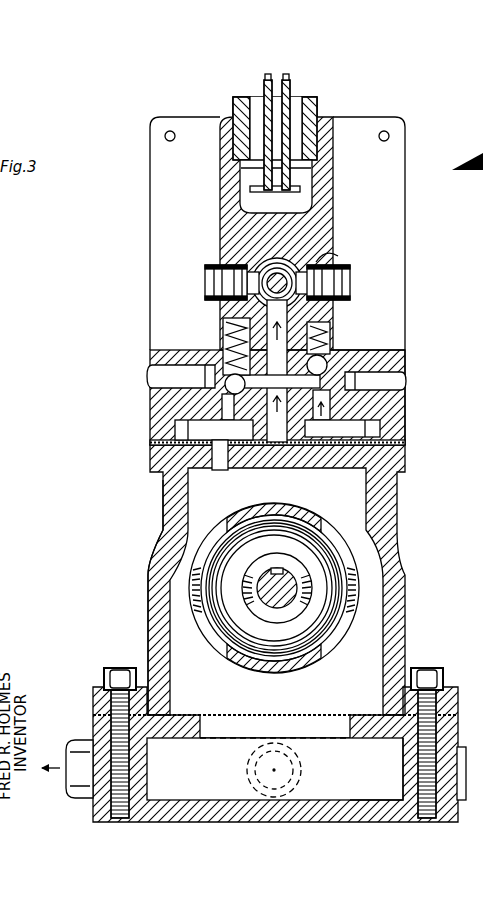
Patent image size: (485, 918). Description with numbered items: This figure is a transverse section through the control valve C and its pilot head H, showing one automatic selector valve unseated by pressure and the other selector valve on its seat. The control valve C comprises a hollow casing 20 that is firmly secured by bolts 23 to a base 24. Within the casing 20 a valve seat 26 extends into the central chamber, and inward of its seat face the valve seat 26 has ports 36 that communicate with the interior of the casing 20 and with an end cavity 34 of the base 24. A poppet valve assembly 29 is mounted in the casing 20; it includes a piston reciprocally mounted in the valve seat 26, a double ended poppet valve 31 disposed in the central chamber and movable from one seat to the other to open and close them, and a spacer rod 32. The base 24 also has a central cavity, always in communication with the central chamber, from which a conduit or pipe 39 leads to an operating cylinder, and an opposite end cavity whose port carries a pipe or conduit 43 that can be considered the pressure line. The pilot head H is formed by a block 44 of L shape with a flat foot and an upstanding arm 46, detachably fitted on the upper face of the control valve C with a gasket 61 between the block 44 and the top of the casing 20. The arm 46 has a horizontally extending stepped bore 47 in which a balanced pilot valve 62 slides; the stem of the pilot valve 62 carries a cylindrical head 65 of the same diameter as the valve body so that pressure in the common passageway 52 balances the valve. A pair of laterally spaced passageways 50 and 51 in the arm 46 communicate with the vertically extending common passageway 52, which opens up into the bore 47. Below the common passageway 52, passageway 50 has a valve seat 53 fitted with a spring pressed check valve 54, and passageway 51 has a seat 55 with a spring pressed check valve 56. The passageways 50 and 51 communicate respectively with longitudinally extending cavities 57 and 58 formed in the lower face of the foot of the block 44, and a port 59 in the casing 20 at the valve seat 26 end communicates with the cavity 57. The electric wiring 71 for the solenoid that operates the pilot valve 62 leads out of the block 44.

The pilot head H is at (218, 209).
The block 44 is at (218, 238).
The upstanding arm 46 is at (338, 242).
The stepped bore 47 is at (262, 272).
The balanced pilot valve 62 is at (318, 259).
The cylindrical head 65 is at (215, 310).
The common passageway 52 is at (334, 298).
The passageway 50 is at (224, 336).
The passageway 51 is at (338, 338).
The valve seat 53 is at (180, 394).
The spring pressed check valve 54 is at (165, 361).
The seat 55 is at (408, 379).
The spring pressed check valve 56 is at (362, 352).
The cavity 57 is at (175, 432).
The cavity 58 is at (362, 426).
The port 59 is at (218, 468).
The gasket 61 is at (382, 443).
The electric wiring 71 is at (313, 105).
The control valve C is at (163, 500).
The hollow casing 20 is at (398, 582).
The valve seat 26 is at (306, 522).
The ports 36 is at (200, 603).
The poppet valve assembly 29 is at (260, 607).
The double ended poppet valve 31 is at (305, 612).
The spacer rod 32 is at (272, 608).
The bolts 23 is at (118, 666).
The conduit or pipe 39 is at (86, 740).
The pipe or conduit 43 is at (300, 770).
The base 24 is at (168, 818).
The end cavity 34 is at (378, 815).